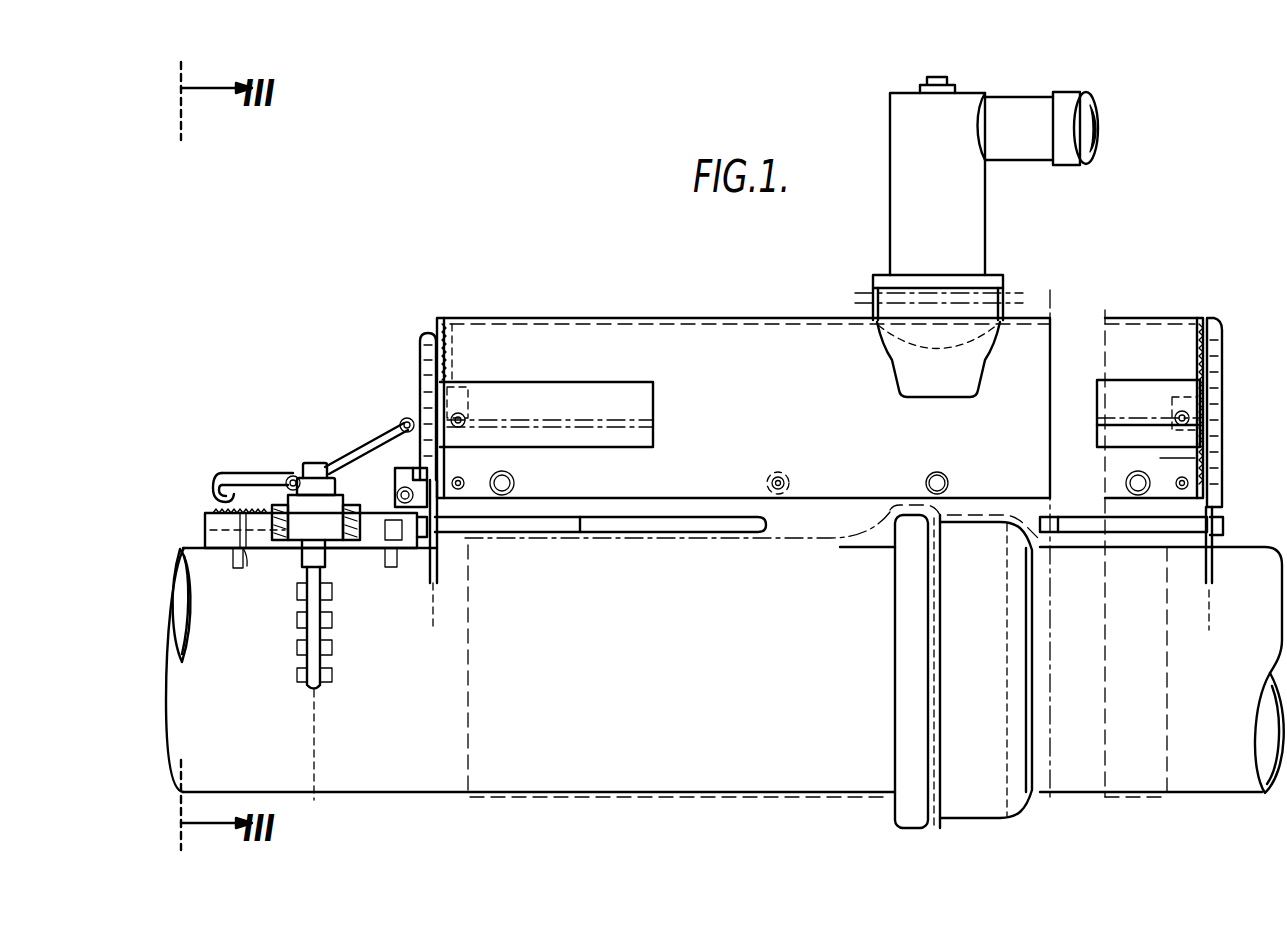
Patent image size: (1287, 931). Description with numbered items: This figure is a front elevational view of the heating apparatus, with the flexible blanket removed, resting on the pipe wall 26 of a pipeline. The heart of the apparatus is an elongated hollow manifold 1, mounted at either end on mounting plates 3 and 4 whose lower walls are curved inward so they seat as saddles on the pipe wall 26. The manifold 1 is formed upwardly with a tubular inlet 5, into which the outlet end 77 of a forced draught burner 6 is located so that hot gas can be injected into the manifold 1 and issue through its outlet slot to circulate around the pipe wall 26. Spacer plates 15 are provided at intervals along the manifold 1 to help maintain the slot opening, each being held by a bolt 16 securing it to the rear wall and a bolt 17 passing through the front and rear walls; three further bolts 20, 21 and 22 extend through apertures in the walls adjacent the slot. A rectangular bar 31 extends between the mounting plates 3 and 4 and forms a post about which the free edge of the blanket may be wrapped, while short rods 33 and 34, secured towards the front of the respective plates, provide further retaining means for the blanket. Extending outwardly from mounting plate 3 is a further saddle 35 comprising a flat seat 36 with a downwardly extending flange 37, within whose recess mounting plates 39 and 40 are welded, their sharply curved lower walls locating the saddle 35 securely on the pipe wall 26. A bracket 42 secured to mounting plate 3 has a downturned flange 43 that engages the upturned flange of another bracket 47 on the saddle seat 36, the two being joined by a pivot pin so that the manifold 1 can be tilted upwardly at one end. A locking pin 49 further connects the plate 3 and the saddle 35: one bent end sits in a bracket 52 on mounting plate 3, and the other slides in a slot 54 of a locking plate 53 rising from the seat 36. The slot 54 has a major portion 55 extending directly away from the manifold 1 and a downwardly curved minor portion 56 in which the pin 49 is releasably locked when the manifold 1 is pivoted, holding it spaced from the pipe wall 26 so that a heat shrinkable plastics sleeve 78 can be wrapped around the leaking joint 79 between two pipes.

The manifold 1 is at (700, 330).
The mounting plate 3 is at (434, 325).
The mounting plate 4 is at (1214, 325).
The tubular inlet 5 is at (1005, 283).
The forced draught burner 6 is at (948, 131).
The spacer plates 15 is at (440, 392).
The bolt 16 is at (466, 422).
The bolt 17 is at (464, 484).
The bolt 20 is at (514, 483).
The bolt 21 is at (948, 483).
The bolt 22 is at (1126, 483).
The pipe wall 26 is at (1256, 778).
The rectangular bar 31 is at (585, 384).
The short rod 33 is at (535, 525).
The short rod 34 is at (1093, 530).
The saddle 35 is at (215, 523).
The seat 36 is at (212, 509).
The flange 37 is at (222, 550).
The mounting plate 39 is at (246, 553).
The mounting plate 40 is at (390, 567).
The bracket 42 is at (397, 470).
The downturned flange 43 is at (397, 475).
The bracket 47 is at (404, 550).
The locking pin 49 is at (378, 444).
The bracket 52 is at (400, 416).
The locking plate 53 is at (262, 471).
The slot 54 is at (257, 492).
The major portion 55 is at (294, 475).
The minor portion 56 is at (222, 476).
The outlet end 77 is at (990, 275).
The heat shrinkable plastics sleeve 78 is at (893, 815).
The joint 79 is at (895, 818).